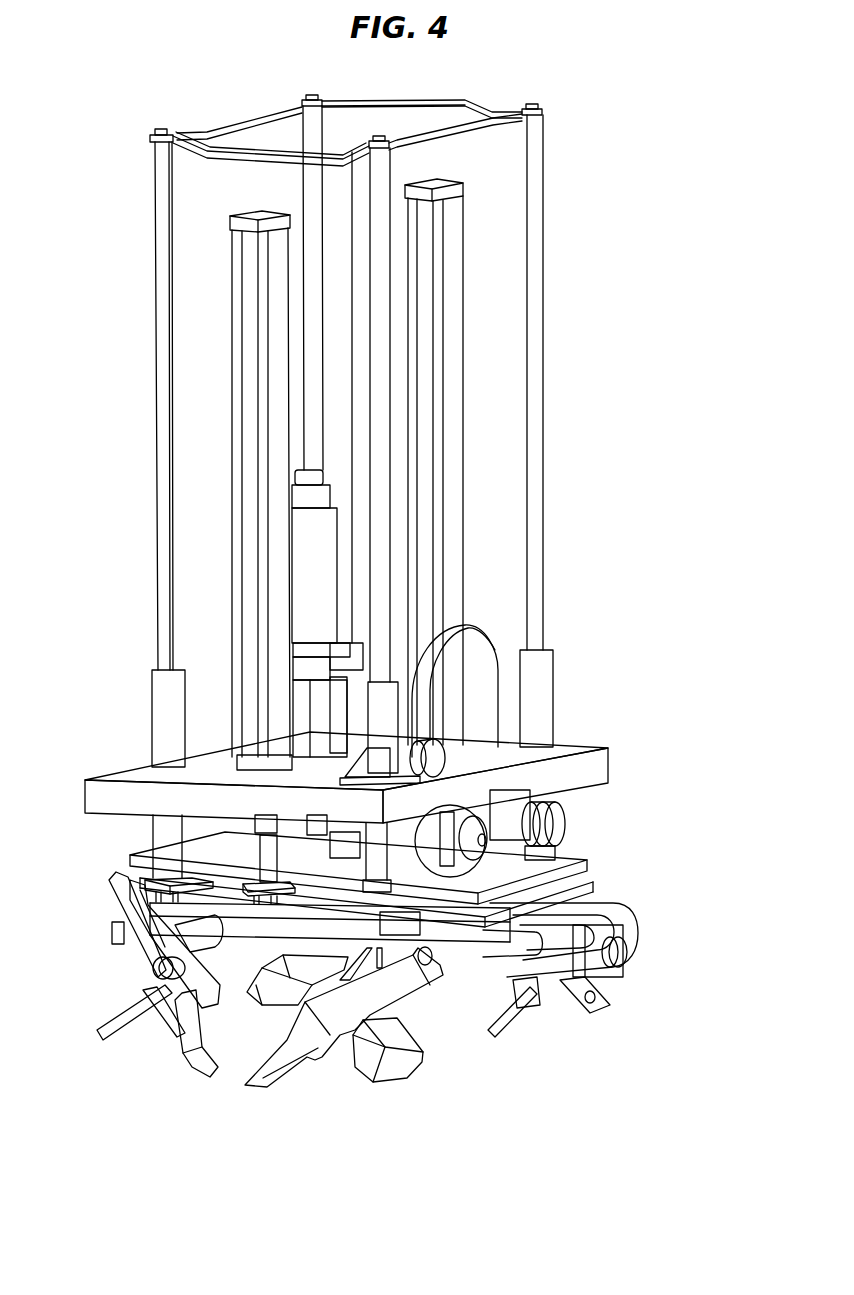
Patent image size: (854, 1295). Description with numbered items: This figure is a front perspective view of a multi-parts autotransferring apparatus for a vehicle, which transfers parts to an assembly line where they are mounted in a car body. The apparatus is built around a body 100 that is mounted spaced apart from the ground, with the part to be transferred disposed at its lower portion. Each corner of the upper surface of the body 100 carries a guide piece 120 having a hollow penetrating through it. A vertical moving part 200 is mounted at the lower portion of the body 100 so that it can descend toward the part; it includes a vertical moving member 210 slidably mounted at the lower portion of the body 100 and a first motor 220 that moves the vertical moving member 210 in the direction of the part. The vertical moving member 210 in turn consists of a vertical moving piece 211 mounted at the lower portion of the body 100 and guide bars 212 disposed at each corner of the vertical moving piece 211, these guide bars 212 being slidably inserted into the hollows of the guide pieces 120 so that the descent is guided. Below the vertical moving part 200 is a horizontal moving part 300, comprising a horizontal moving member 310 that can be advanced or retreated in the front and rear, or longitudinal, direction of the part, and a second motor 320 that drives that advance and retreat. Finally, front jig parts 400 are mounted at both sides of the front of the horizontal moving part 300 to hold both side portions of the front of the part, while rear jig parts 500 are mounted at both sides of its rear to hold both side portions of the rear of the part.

The body 100 is at (600, 765).
The guide pieces 120 is at (543, 672).
The vertical moving part 200 is at (440, 748).
The vertical moving member 210 is at (587, 869).
The vertical moving piece 211 is at (455, 287).
The guide bars 212 is at (533, 347).
The first motor 220 is at (440, 635).
The horizontal moving part 300 is at (611, 1000).
The horizontal moving member 310 is at (523, 987).
The second motor 320 is at (627, 953).
The front jig parts 400 is at (385, 1098).
The rear jig parts 500 is at (95, 1060).